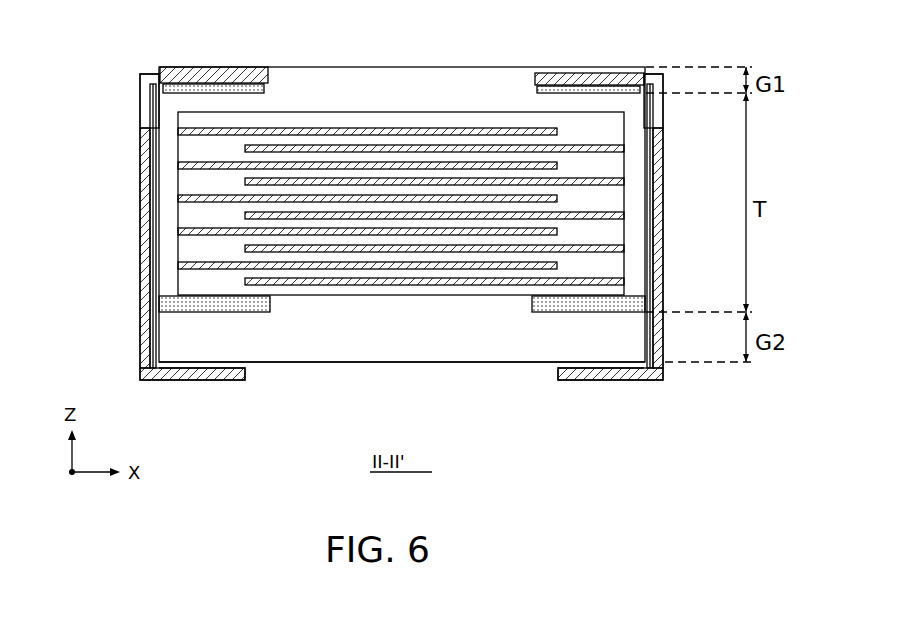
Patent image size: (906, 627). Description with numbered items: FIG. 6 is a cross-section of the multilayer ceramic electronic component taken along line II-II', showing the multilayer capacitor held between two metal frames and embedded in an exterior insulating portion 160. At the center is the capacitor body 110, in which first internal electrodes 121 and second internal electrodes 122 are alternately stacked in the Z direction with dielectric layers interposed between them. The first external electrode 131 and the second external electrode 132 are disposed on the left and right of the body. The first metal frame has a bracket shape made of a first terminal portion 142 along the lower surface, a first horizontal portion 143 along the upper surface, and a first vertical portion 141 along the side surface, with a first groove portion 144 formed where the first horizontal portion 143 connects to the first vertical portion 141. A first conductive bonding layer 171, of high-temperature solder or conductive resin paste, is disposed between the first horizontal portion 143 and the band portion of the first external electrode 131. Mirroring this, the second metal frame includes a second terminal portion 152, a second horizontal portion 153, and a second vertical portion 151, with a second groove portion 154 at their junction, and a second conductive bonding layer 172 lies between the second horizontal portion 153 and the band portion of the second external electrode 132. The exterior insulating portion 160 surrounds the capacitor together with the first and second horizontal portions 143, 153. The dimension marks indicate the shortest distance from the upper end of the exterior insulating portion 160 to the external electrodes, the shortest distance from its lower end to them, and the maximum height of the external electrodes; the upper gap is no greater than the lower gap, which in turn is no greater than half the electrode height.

The capacitor body 110 is at (400, 112).
The first internal electrode 121 is at (335, 146).
The second internal electrode 122 is at (465, 128).
The first external electrode 131 is at (146, 197).
The second external electrode 132 is at (657, 197).
The first vertical portion 141 is at (146, 252).
The first terminal portion 142 is at (192, 382).
The first horizontal portion 143 is at (208, 80).
The first groove portion 144 is at (150, 119).
The second vertical portion 151 is at (658, 254).
The second terminal portion 152 is at (606, 382).
The second horizontal portion 153 is at (560, 78).
The second groove portion 154 is at (656, 119).
The exterior insulating portion 160 is at (400, 350).
The first conductive bonding layer 171 is at (160, 88).
The second conductive bonding layer 172 is at (624, 88).